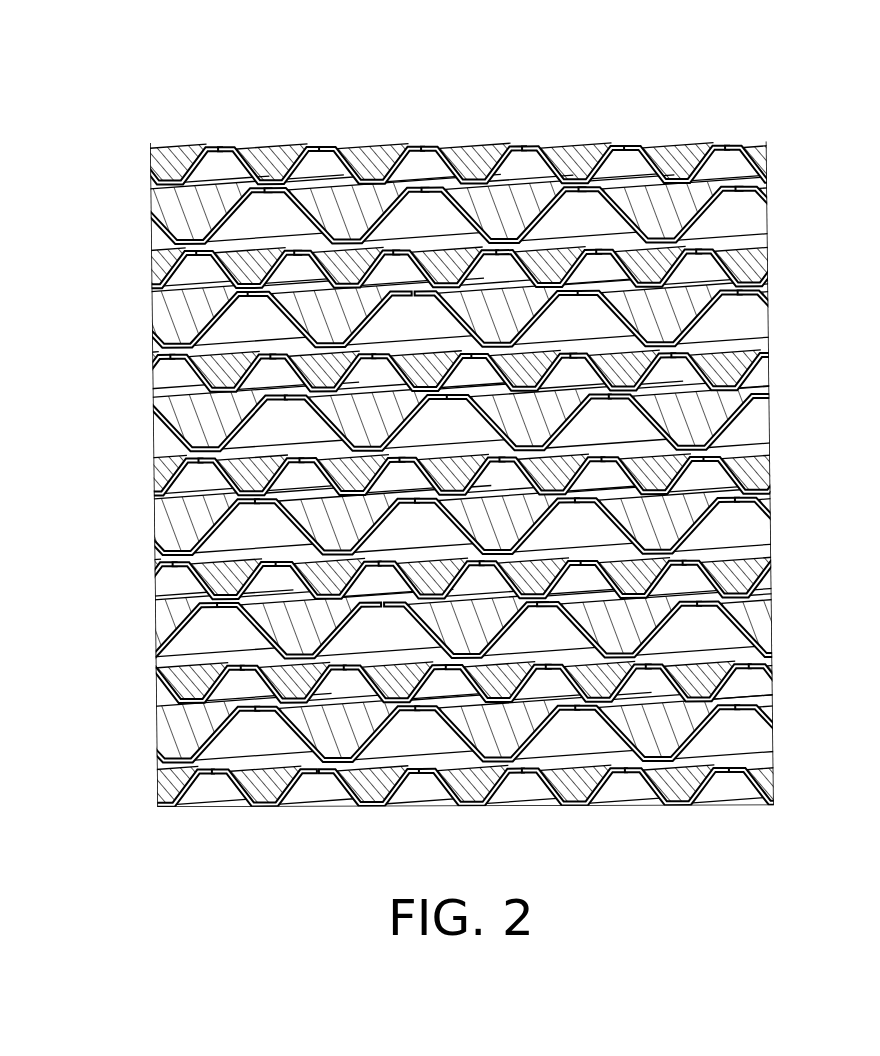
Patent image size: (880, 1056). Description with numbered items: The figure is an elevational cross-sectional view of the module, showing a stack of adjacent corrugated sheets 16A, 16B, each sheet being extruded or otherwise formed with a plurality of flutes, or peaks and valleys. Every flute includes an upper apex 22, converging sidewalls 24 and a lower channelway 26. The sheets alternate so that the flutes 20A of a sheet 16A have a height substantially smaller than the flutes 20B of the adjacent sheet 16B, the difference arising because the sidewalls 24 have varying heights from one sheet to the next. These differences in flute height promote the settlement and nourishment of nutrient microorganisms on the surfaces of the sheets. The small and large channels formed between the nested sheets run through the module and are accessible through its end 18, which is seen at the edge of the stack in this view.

The sheet 16A is at (160, 143).
The sheet 16B is at (158, 230).
The end 18 is at (655, 493).
The flute 20A is at (236, 121).
The flute 20B is at (265, 210).
The upper apex 22 is at (328, 142).
The sidewall 24 is at (287, 152).
The lower channelway 26 is at (477, 175).